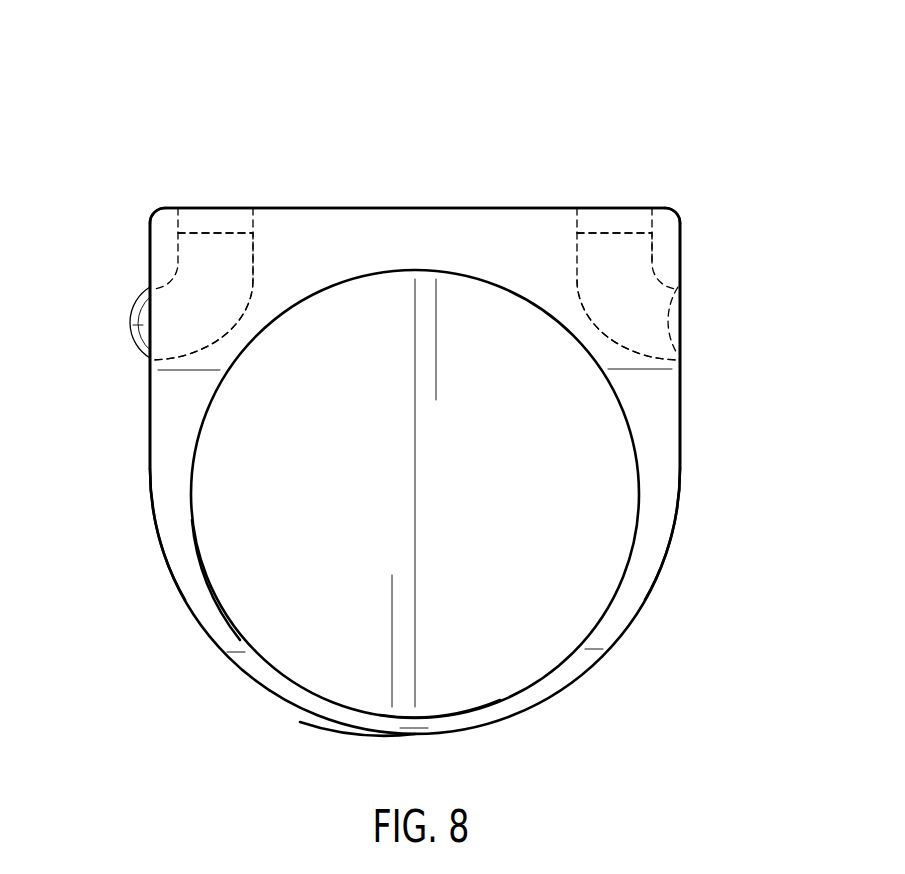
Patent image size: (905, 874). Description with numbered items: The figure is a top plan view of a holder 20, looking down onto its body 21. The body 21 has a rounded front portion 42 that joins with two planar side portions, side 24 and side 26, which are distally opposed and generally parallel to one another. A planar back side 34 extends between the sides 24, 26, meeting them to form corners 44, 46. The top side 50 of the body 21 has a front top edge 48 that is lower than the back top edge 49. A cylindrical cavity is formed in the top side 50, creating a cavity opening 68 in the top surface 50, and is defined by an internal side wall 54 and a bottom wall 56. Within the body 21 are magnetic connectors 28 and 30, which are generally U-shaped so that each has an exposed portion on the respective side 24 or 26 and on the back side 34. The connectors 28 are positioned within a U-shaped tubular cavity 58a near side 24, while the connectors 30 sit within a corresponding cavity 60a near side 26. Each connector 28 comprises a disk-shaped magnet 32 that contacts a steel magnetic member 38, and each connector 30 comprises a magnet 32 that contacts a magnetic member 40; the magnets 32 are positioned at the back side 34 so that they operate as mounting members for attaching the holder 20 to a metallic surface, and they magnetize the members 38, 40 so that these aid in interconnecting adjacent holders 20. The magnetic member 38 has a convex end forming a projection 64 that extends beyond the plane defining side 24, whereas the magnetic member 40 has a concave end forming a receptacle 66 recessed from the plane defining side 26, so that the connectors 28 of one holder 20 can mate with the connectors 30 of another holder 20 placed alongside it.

The holder 20 is at (235, 49).
The body 21 is at (149, 440).
The side 24 is at (148, 267).
The side 26 is at (683, 385).
The magnetic connector 28 is at (254, 277).
The magnetic connector 30 is at (575, 276).
The magnet 32 is at (208, 226).
The back side 34 is at (398, 207).
The magnetic member 38 is at (200, 273).
The magnetic member 40 is at (620, 278).
The rounded front portion 42 is at (310, 720).
The corner 44 is at (157, 212).
The corner 46 is at (677, 208).
The front top edge 48 is at (463, 722).
The back top edge 49 is at (402, 245).
The top side 50 is at (163, 515).
The internal side wall 54 is at (622, 585).
The bottom wall 56 is at (455, 502).
The cavity 58a is at (228, 333).
The cavity 60a is at (597, 325).
The projection 64 is at (130, 323).
The receptacle 66 is at (683, 318).
The cavity opening 68 is at (213, 602).